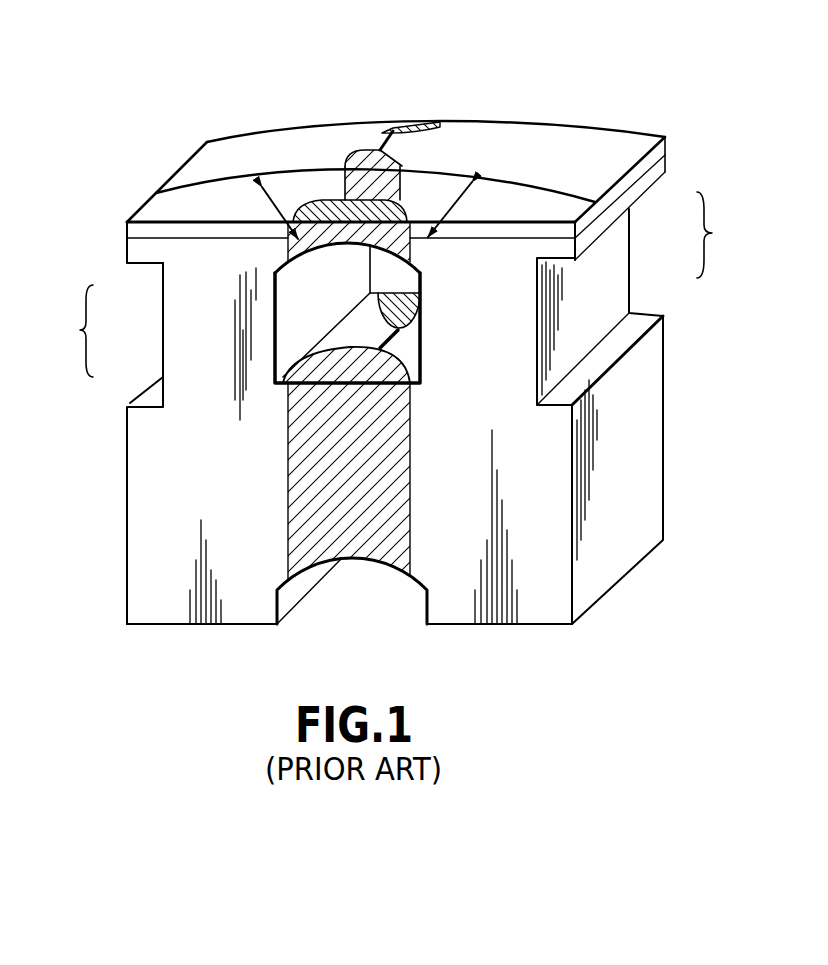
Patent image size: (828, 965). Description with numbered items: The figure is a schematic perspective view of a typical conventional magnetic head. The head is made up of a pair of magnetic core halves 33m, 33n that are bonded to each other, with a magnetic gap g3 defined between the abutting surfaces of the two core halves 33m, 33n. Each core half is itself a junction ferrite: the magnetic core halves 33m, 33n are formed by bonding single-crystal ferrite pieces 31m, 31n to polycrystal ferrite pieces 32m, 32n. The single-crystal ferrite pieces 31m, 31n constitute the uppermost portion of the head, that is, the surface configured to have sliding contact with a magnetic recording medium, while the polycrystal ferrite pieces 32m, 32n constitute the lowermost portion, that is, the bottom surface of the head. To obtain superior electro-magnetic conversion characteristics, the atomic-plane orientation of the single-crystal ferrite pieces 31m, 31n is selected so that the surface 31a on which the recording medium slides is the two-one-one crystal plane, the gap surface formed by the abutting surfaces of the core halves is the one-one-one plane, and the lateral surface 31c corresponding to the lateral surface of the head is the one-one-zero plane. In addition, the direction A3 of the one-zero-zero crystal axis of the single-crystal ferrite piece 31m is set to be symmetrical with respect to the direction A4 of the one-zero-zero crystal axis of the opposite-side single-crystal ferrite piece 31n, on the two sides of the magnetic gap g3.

The surface 31a is at (190, 162).
The lateral surface 31c is at (288, 185).
The direction of the 100 crystal axis A3 is at (257, 180).
The direction of the 100 crystal axis A4 is at (477, 175).
The magnetic gap g3 is at (381, 130).
The single-crystal ferrite piece 31n is at (593, 185).
The polycrystal ferrite piece 32n is at (507, 297).
The magnetic core half 33n is at (733, 235).
The single-crystal ferrite piece 31m is at (198, 190).
The polycrystal ferrite piece 32m is at (198, 343).
The magnetic core half 33m is at (62, 331).